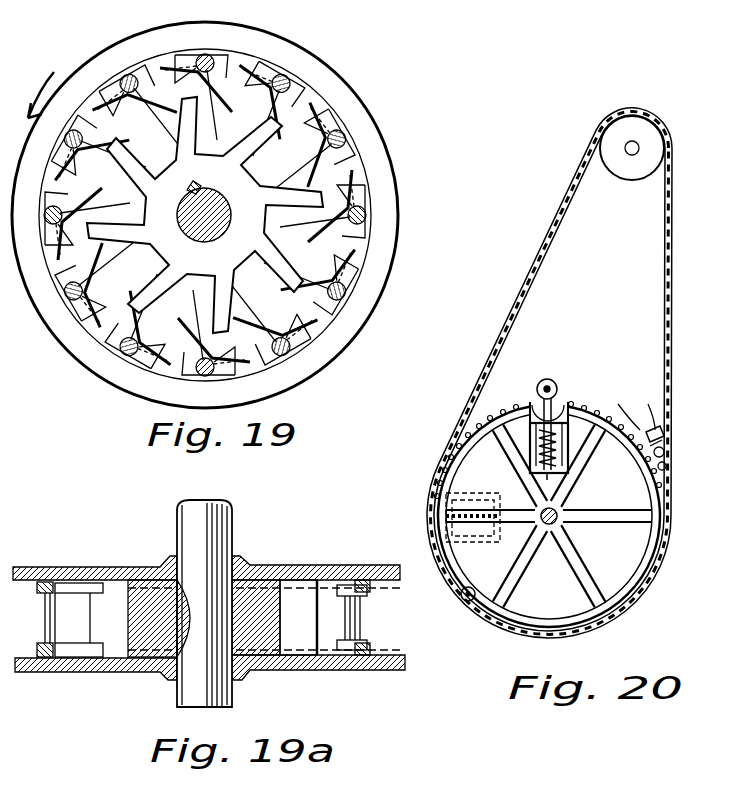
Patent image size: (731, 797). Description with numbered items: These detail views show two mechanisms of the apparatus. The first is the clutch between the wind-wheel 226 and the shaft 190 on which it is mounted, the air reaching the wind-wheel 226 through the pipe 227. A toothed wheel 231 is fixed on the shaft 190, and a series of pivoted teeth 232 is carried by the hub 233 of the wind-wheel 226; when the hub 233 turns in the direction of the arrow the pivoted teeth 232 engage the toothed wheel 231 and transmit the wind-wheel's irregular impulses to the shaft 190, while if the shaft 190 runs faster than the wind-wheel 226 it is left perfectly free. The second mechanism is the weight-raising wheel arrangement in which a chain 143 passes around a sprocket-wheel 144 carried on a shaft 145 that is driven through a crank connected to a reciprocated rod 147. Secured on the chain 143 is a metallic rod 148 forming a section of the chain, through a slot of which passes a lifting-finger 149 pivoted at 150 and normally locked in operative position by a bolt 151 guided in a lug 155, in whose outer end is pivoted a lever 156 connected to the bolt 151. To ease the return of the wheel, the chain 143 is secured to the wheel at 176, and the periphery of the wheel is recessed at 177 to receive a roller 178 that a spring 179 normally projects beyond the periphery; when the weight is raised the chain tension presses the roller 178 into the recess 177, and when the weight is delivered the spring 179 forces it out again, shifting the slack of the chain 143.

In FIG. 20, the chain 143 is at (673, 283).
In FIG. 20, the sprocket-wheel 144 is at (648, 588).
In FIG. 20, the shaft 145 is at (559, 525).
In FIG. 20, the rod 147 is at (655, 157).
In FIG. 20, the metallic rod or bar 148 is at (664, 433).
In FIG. 20, the lifting-finger 149 is at (666, 455).
In FIG. 20, the pivot 150 is at (668, 467).
In FIG. 20, the bolt 151 is at (650, 446).
In FIG. 20, the lug 155 is at (647, 409).
In FIG. 20, the lever 156 is at (622, 409).
In FIG. 20, the chain securing point 176 is at (466, 603).
In FIG. 20, the recess 177 is at (539, 393).
In FIG. 20, the roller 178 is at (552, 383).
In FIG. 20, the spring 179 is at (570, 463).
In FIG. 19, the shaft 190 is at (226, 212).
In FIG. 19A, the shaft 190 is at (232, 531).
In FIG. 19, the wind-wheel 226 is at (388, 175).
In FIG. 19A, the pipe 227 is at (364, 666).
In FIG. 19, the toothed wheel 231 is at (205, 215).
In FIG. 19A, the toothed wheel 231 is at (295, 652).
In FIG. 19, the pivoted teeth 232 is at (138, 103).
In FIG. 19A, the pivoted teeth 232 is at (366, 616).
In FIG. 19, the hub 233 is at (365, 251).
In FIG. 19A, the hub 233 is at (372, 652).